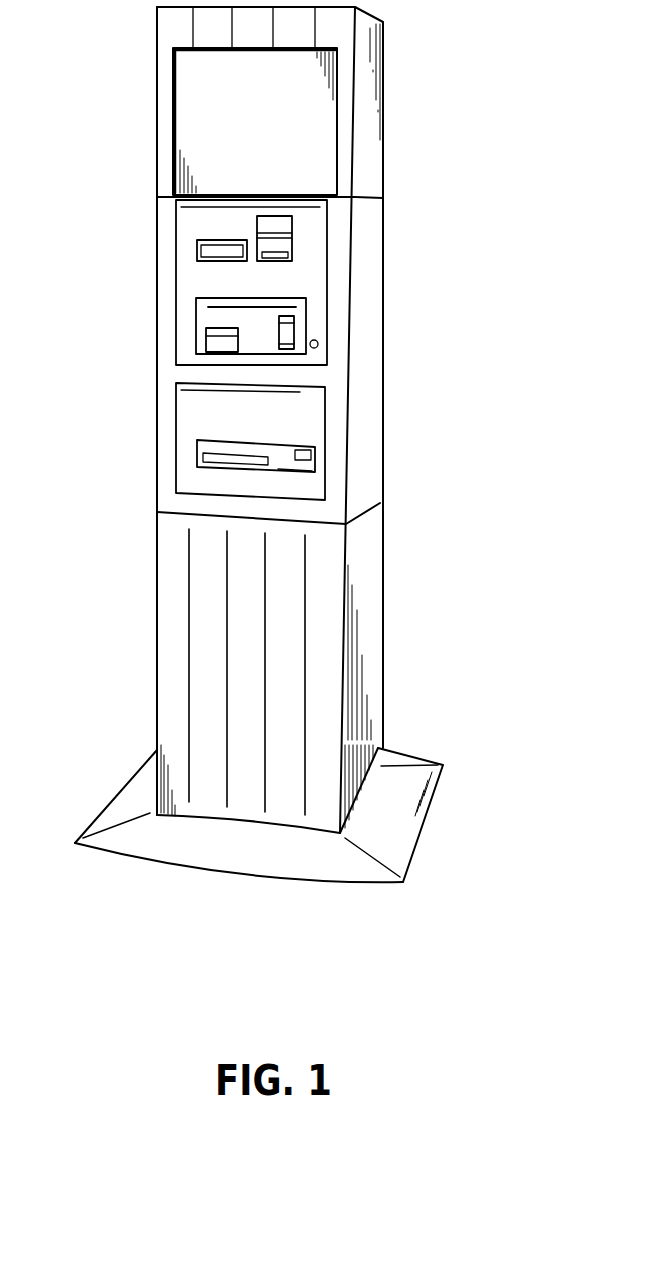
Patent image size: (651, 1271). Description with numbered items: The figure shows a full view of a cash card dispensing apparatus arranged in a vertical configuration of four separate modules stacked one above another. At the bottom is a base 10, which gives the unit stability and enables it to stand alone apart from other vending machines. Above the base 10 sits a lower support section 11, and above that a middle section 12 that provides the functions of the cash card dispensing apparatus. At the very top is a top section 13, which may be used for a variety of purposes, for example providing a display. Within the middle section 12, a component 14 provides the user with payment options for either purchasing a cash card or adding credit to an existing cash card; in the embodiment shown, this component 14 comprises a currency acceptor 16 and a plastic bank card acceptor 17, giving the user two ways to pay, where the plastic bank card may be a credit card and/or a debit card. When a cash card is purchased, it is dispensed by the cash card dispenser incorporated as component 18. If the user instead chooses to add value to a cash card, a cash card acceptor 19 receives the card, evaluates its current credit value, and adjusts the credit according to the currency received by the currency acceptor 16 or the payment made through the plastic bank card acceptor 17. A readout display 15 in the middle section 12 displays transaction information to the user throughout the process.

The base 10 is at (118, 790).
The lower support section 11 is at (156, 560).
The middle section 12 is at (156, 318).
The top section 13 is at (156, 111).
The component providing user payment options 14 is at (303, 317).
The readout display 15 is at (197, 250).
The currency acceptor 16 is at (294, 337).
The plastic bank card acceptor 17 is at (206, 342).
The cash card dispenser 18 is at (315, 462).
The cash card acceptor 19 is at (292, 252).